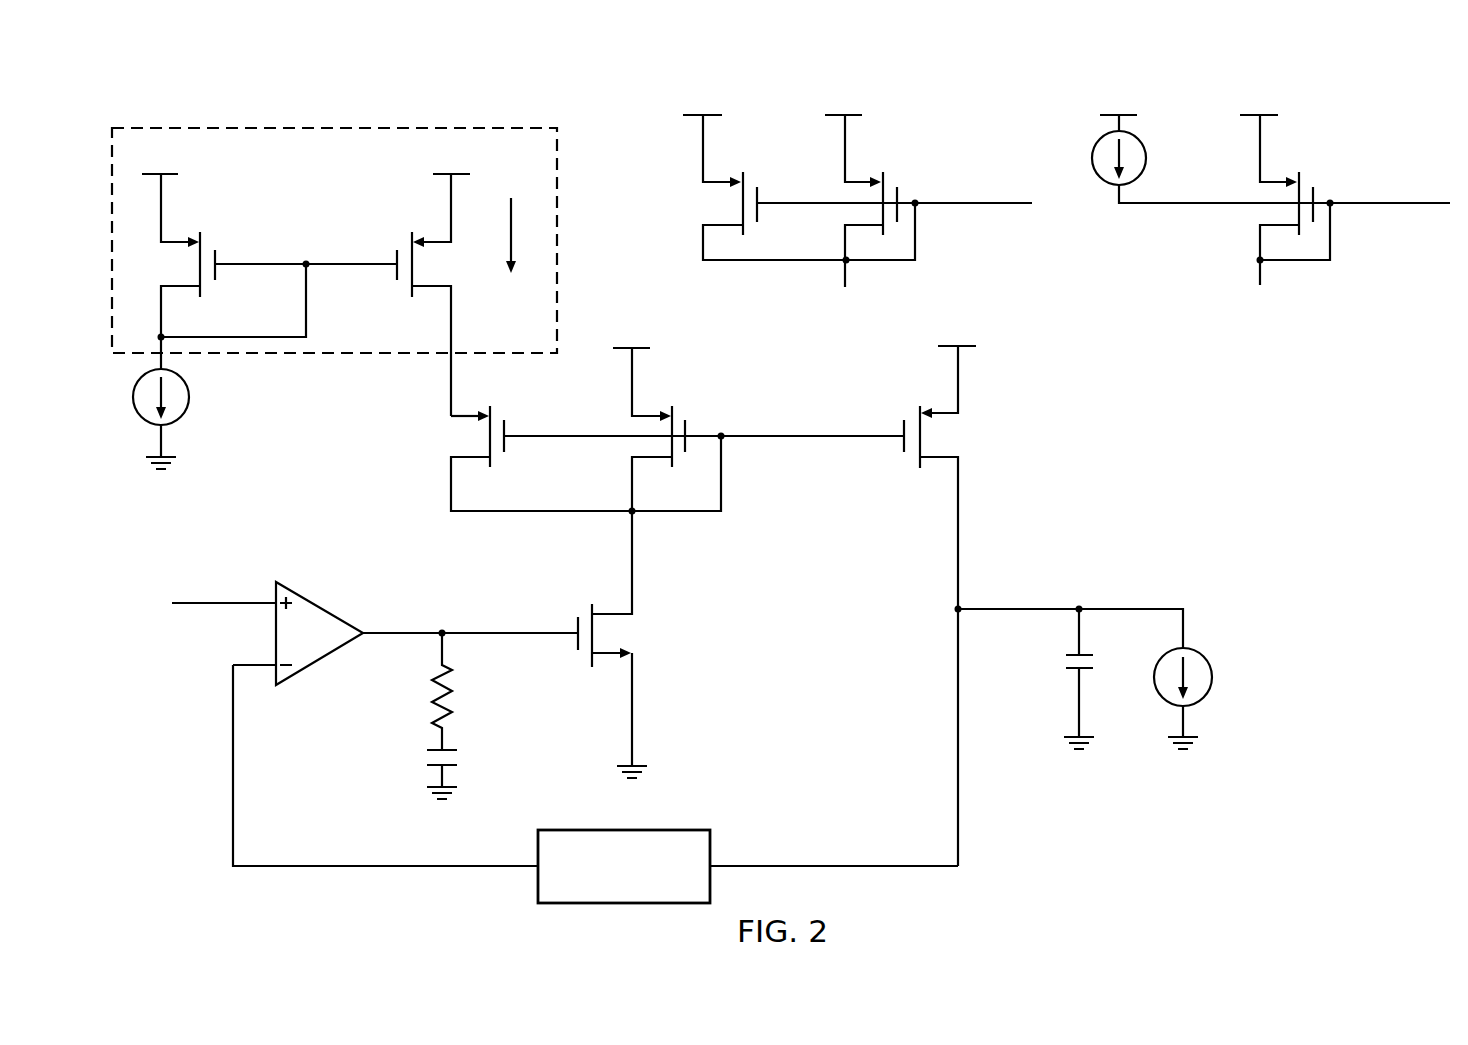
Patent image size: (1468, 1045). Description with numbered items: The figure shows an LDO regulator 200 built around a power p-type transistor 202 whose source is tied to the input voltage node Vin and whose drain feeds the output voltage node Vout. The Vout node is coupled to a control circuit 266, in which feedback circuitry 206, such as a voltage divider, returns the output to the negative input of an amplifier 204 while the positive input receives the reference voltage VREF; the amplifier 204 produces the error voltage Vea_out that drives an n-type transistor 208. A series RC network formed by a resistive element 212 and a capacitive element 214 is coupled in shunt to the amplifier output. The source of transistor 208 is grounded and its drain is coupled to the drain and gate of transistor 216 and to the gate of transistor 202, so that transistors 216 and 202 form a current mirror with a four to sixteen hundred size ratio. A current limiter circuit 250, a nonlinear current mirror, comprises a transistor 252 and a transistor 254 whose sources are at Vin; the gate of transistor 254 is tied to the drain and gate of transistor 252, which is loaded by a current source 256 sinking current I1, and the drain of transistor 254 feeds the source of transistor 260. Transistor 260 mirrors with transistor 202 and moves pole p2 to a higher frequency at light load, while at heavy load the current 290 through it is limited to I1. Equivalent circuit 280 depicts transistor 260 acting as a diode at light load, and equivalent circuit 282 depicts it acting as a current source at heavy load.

The LDO regulator 200 is at (153, 113).
The transistor 202 is at (936, 460).
The amplifier 204 is at (322, 607).
The feedback circuitry 206 is at (710, 843).
The transistor 208 is at (610, 612).
The resistive element 212 is at (428, 688).
The capacitive element 214 is at (432, 769).
The transistor 216 is at (652, 416).
The current limiter circuit 250 is at (480, 128).
The transistor 252 is at (215, 262).
The transistor 254 is at (412, 290).
The current source 256 is at (189, 394).
The transistor 260 is at (465, 458).
The control circuit 266 is at (183, 548).
The equivalent circuit 280 is at (675, 63).
The equivalent circuit 282 is at (1120, 63).
The current 290 is at (511, 200).